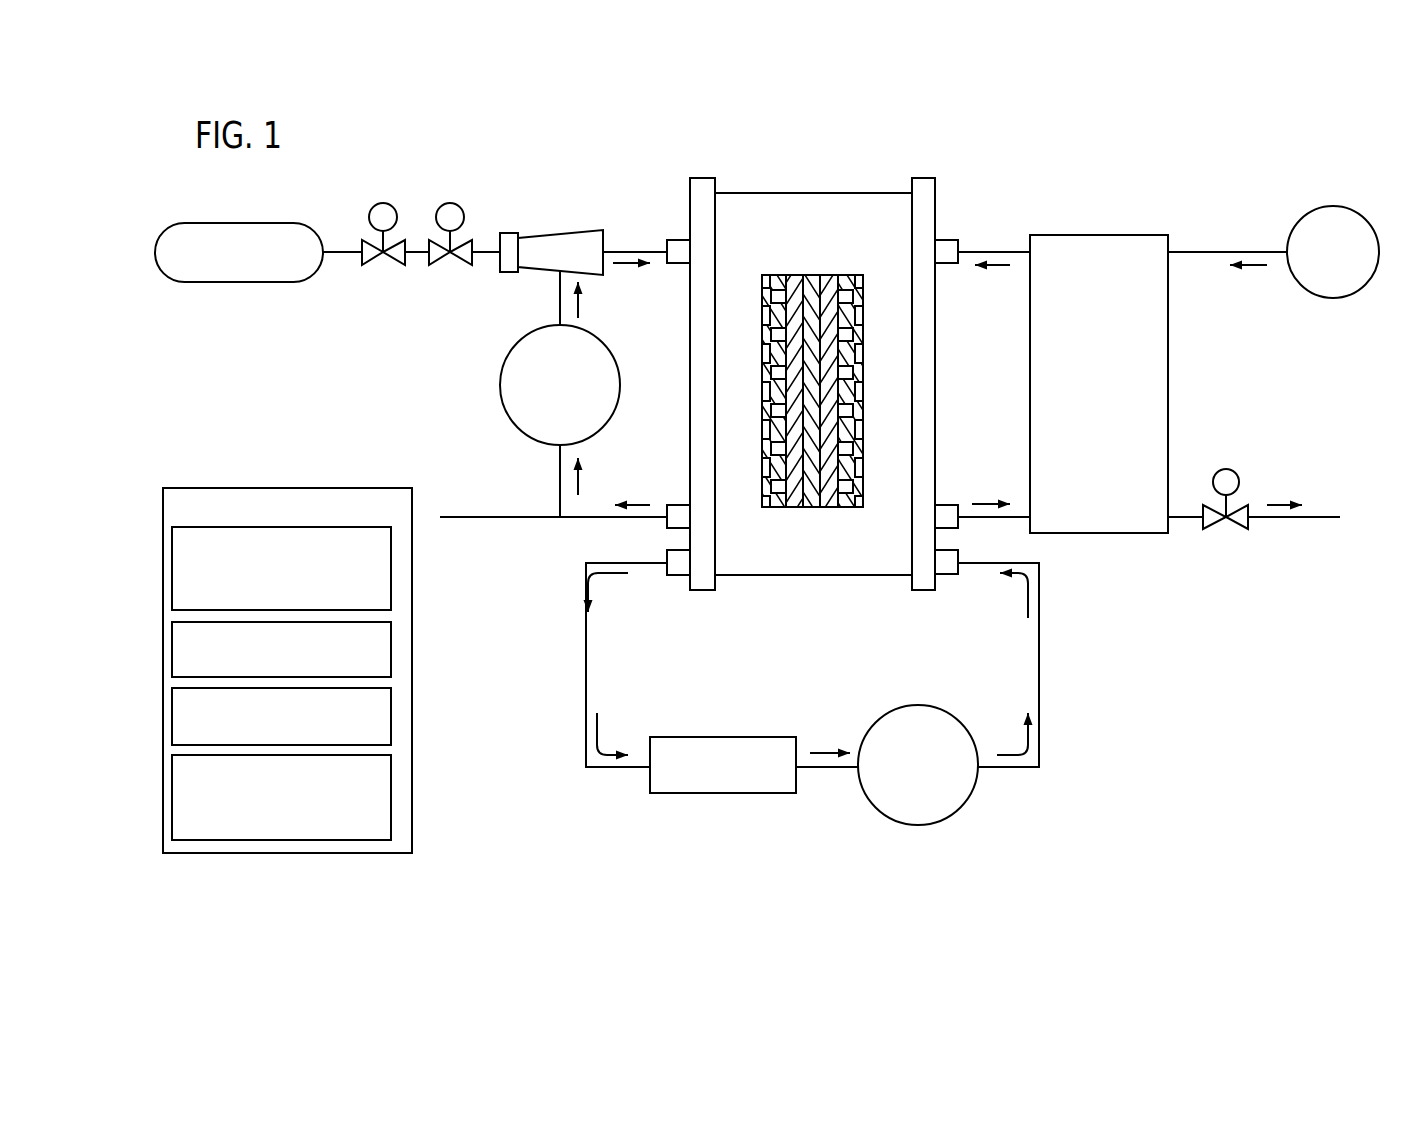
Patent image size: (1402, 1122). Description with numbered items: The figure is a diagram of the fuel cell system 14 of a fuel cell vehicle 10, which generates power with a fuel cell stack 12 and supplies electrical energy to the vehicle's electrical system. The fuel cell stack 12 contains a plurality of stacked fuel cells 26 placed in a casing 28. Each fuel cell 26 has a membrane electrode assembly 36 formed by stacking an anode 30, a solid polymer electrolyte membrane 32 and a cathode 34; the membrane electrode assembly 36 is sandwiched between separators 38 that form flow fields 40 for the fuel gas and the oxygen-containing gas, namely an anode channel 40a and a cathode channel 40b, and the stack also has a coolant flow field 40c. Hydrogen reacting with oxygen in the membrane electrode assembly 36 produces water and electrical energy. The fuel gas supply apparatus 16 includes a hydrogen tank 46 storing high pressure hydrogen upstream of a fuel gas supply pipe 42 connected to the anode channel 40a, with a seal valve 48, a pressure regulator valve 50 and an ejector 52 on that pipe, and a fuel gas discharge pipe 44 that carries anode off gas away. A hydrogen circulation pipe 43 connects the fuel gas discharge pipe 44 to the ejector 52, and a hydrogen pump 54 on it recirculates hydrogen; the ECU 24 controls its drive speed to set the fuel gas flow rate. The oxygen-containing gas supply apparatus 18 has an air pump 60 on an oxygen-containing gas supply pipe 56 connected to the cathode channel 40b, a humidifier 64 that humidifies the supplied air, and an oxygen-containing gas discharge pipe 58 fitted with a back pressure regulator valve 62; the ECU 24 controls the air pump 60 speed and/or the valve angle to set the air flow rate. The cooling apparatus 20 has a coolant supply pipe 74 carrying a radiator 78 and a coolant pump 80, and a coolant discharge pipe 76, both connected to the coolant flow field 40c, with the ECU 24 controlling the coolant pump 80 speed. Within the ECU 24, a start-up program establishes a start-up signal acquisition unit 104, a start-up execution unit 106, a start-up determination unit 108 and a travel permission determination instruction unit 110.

The fuel cell vehicle 10 is at (540, 156).
The fuel cell system 14 is at (575, 156).
The fuel cell stack 12 is at (782, 192).
The fuel gas supply apparatus 16 is at (411, 362).
The oxygen-containing gas supply apparatus 18 is at (1168, 357).
The cooling apparatus 20 is at (784, 694).
The ECU 24 is at (315, 645).
The fuel cell 26 is at (816, 358).
The casing 28 is at (702, 177).
The anode 30 is at (795, 273).
The solid polymer electrolyte membrane 32 is at (812, 273).
The cathode 34 is at (840, 369).
The membrane electrode assembly 36 is at (813, 352).
The separator 38 is at (816, 412).
The flow field 40 is at (816, 421).
The anode channel 40a is at (782, 335).
The cathode channel 40b is at (843, 408).
The coolant flow field 40c is at (765, 478).
The fuel gas supply pipe 42 is at (483, 248).
The hydrogen circulation pipe 43 is at (560, 298).
The fuel gas discharge pipe 44 is at (498, 520).
The hydrogen tank 46 is at (228, 223).
The seal valve 48 is at (379, 203).
The pressure regulator valve 50 is at (447, 203).
The ejector 52 is at (578, 240).
The hydrogen pump 54 is at (518, 415).
The oxygen-containing gas supply pipe 56 is at (1233, 252).
The oxygen-containing gas discharge pipe 58 is at (1185, 519).
The air pump 60 is at (1355, 208).
The back pressure regulator valve 62 is at (1222, 470).
The humidifier 64 is at (1116, 235).
The coolant supply pipe 74 is at (813, 665).
The coolant discharge pipe 76 is at (586, 665).
The radiator 78 is at (752, 737).
The coolant pump 80 is at (932, 710).
The start-up signal acquisition unit 104 is at (391, 580).
The start-up execution unit 106 is at (391, 648).
The start-up determination unit 108 is at (391, 716).
The travel permission determination instruction unit 110 is at (391, 802).